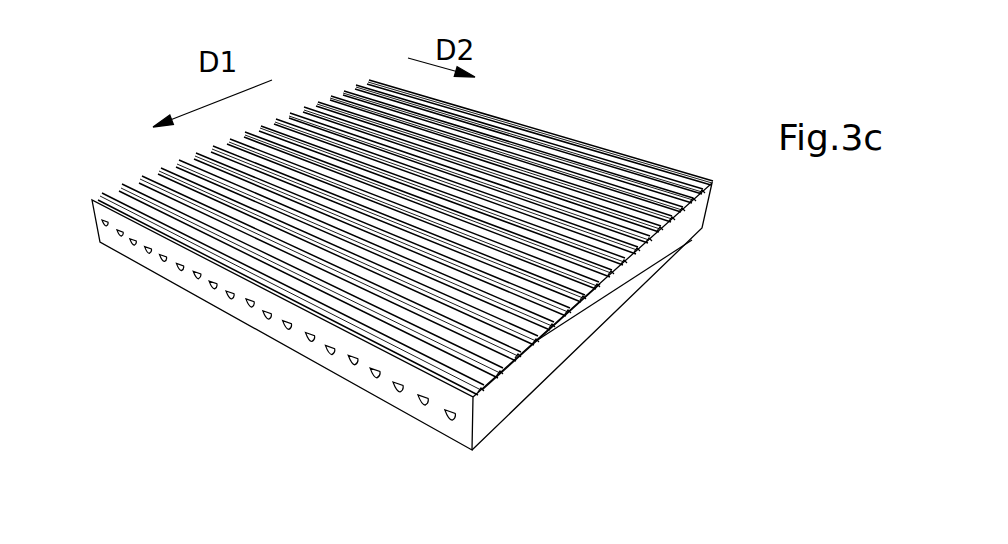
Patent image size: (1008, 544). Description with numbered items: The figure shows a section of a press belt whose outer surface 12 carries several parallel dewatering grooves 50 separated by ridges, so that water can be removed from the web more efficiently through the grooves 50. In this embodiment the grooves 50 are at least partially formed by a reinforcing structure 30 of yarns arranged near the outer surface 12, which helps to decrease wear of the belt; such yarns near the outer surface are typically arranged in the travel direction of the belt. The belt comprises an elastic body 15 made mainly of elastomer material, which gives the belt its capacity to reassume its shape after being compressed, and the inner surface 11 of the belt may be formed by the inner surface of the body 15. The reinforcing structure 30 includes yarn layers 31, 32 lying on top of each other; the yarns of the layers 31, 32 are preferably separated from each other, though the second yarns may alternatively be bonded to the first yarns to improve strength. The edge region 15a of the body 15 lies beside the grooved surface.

The inner surface 11 is at (456, 316).
The outer surface 12 is at (523, 128).
The elastic body 15 is at (693, 218).
The edge of side face 15a is at (542, 358).
The reinforcing structure 30 is at (428, 352).
The first yarn layer 31 is at (376, 378).
The second yarn layer 32 is at (692, 240).
The dewatering groove 50 is at (490, 375).